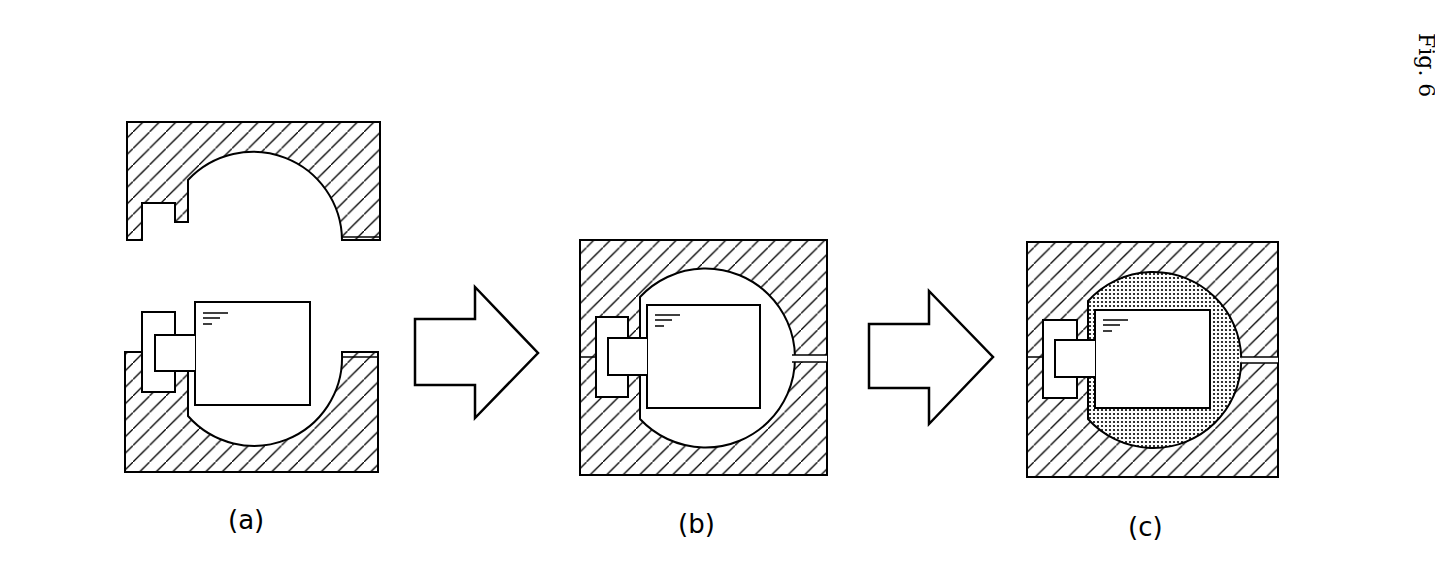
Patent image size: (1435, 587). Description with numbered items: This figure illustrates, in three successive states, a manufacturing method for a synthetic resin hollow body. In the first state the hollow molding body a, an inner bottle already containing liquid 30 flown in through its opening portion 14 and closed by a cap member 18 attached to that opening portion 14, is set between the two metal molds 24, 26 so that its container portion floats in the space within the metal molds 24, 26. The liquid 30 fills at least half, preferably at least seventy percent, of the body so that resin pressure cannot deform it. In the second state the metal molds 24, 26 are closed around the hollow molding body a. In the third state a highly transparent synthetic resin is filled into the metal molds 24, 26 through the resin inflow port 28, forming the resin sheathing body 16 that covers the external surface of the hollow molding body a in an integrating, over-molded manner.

The metal mold 26 is at (342, 137).
The metal mold 24 is at (340, 455).
The resin inflow port 28 is at (828, 360).
The resin sheathing body 16 is at (1127, 425).
The hollow molding body a is at (312, 330).
The liquid 30 is at (265, 315).
The opening portion 14 is at (185, 332).
The cap member 18 is at (148, 323).